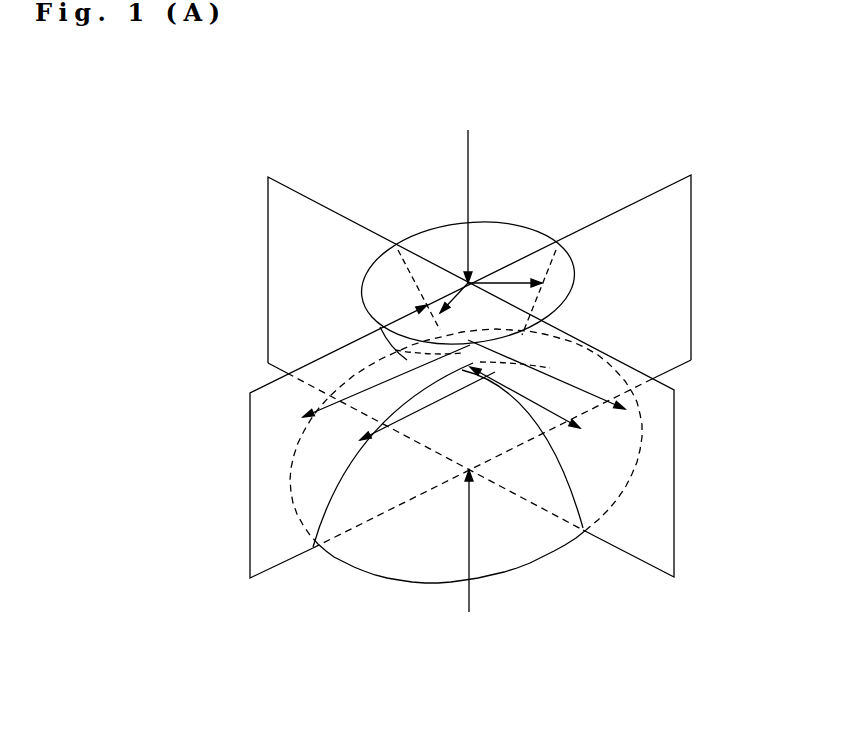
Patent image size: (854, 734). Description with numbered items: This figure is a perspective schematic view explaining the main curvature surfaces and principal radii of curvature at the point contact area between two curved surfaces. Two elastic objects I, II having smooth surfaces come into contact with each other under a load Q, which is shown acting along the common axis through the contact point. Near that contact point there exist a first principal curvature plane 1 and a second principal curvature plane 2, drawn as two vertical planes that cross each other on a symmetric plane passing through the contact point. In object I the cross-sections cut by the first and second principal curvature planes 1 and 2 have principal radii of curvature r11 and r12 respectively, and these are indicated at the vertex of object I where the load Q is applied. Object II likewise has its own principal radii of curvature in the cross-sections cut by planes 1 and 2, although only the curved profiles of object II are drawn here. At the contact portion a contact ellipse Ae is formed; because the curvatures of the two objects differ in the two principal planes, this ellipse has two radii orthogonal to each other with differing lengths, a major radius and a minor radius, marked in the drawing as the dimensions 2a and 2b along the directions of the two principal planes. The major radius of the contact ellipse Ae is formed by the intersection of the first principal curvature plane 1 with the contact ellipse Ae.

The first principal curvature plane 1 is at (289, 268).
The second principal curvature plane 2 is at (670, 265).
The elastic object I is at (545, 316).
The elastic object II is at (525, 538).
The load Q is at (479, 372).
The contact ellipse Ae is at (432, 304).
The principal radius of curvature of object I in first principal curvature plane r11 is at (468, 340).
The principal radius of curvature of object I in second principal curvature plane r12 is at (510, 278).
The lens diameter in first plane direction 2a is at (546, 389).
The lens diameter in second plane direction 2b is at (399, 392).